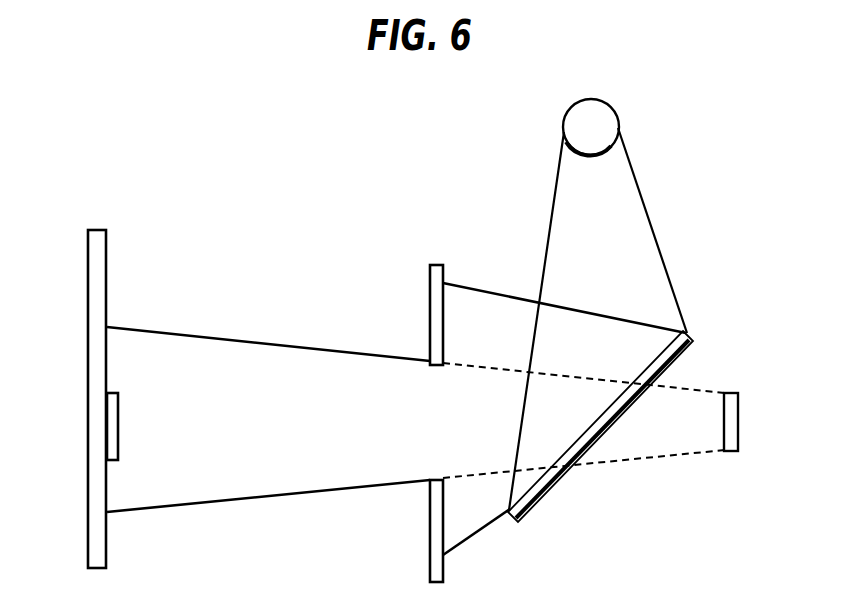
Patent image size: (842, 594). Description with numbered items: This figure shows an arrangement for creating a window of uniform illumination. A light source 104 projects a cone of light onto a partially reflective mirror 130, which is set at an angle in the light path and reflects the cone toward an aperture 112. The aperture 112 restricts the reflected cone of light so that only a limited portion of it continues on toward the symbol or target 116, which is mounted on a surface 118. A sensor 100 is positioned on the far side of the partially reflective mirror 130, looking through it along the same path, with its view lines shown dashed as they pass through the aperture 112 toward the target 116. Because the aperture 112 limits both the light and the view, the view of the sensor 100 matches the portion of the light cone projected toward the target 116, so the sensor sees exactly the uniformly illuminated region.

The sensor 100 is at (727, 390).
The light source 104 is at (588, 110).
The aperture 112 is at (429, 320).
The symbol 116 is at (118, 439).
The surface 118 is at (87, 297).
The partially reflective mirror 130 is at (590, 452).